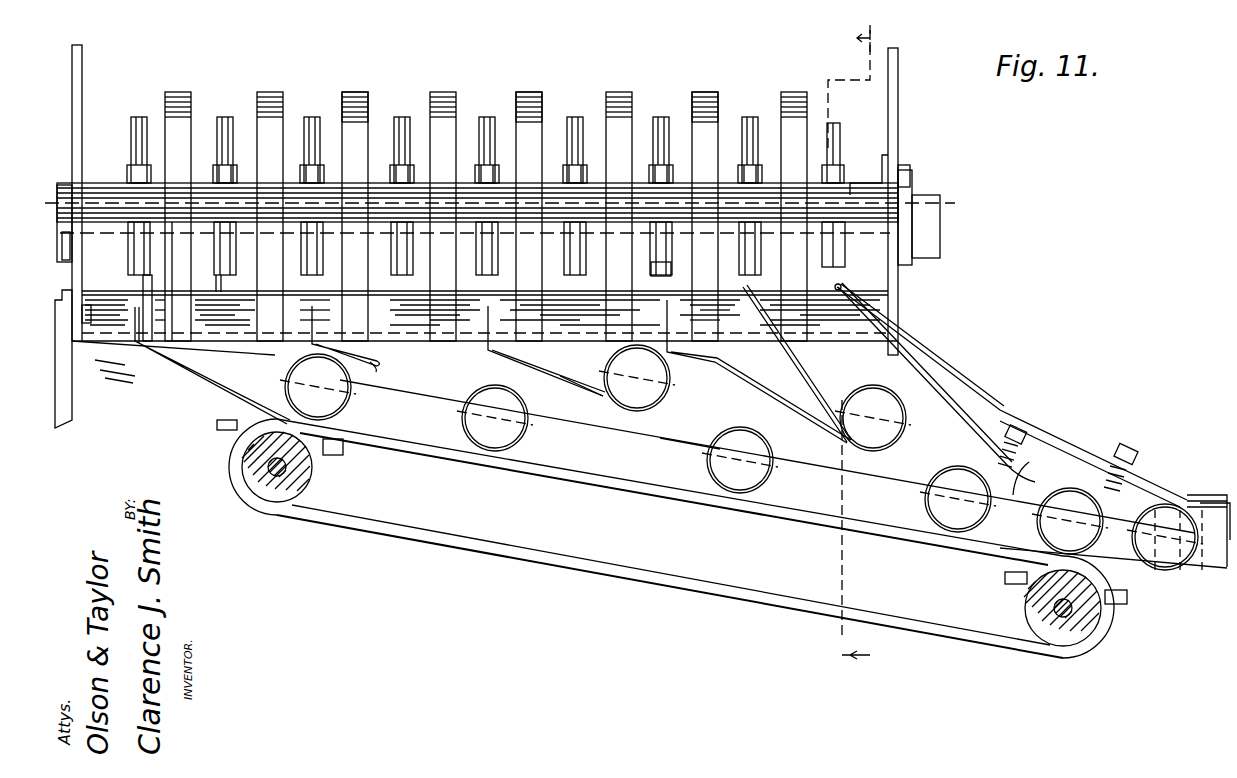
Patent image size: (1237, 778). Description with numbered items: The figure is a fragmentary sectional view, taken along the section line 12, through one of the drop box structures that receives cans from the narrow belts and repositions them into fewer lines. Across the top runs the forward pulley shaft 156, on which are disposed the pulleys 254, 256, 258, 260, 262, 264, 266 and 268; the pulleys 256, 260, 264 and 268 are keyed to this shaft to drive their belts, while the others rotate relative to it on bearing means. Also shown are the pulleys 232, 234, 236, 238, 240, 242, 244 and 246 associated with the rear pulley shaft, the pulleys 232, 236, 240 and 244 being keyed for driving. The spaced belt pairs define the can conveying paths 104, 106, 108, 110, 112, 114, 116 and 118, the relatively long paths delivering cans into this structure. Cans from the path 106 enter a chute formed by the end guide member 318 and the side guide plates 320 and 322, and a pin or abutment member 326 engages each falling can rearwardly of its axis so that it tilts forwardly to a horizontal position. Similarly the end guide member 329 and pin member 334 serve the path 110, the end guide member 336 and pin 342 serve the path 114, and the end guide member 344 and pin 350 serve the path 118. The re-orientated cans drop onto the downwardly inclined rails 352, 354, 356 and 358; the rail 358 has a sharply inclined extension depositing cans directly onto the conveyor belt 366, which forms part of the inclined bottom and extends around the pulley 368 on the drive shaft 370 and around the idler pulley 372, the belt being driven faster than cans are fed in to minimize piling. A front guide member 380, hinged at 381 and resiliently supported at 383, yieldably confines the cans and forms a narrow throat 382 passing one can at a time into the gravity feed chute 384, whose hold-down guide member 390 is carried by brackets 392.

The section line 11—11 of Fig. 12 is at (869, 346).
The can conveying path 104 is at (808, 72).
The can conveying path 106 is at (718, 72).
The can conveying path 108 is at (631, 70).
The can conveying path 110 is at (543, 68).
The can conveying path 112 is at (458, 70).
The can conveying path 114 is at (371, 72).
The can conveying path 116 is at (286, 70).
The can conveying path 118 is at (196, 70).
The pulley shaft 156 is at (942, 228).
The pulley 232 is at (840, 165).
The pulley 234 is at (762, 172).
The pulley 236 is at (650, 172).
The pulley 238 is at (588, 172).
The pulley 240 is at (476, 175).
The pulley 242 is at (414, 172).
The pulley 244 is at (300, 170).
The pulley 246 is at (212, 165).
The pulley 254 is at (740, 175).
The pulley 256 is at (668, 278).
The pulley 258 is at (565, 172).
The pulley 260 is at (477, 170).
The pulley 262 is at (392, 170).
The pulley 264 is at (326, 170).
The pulley 266 is at (213, 170).
The pulley 268 is at (128, 172).
The end guide member 318 is at (710, 95).
The side guide plate 320 is at (668, 276).
The side guide plate 322 is at (755, 350).
The pin or abutment member 326 is at (790, 340).
The end guide member 329 is at (536, 92).
The pin member 334 is at (578, 366).
The end guide member 336 is at (372, 92).
The pin 342 is at (407, 350).
The end guide member 344 is at (167, 92).
The pin 350 is at (225, 338).
The downwardly inclined rail 352 is at (708, 370).
The downwardly inclined rail 354 is at (498, 360).
The downwardly inclined rail 356 is at (373, 370).
The downwardly inclined rail 358 is at (172, 354).
The conveyor belt 366 is at (615, 574).
The pulley 368 is at (1025, 608).
The drive shaft 370 is at (1067, 615).
The idler pulley 372 is at (292, 502).
The front guide member 380 is at (946, 406).
The hinge connection 381 is at (841, 287).
The narrow throat 382 is at (1016, 495).
The resilient support 383 is at (1012, 428).
The gravity feed conveyor or chute 384 is at (1187, 496).
The upper or hold-down guide member 390 is at (1228, 503).
The bracket 392 is at (1223, 507).